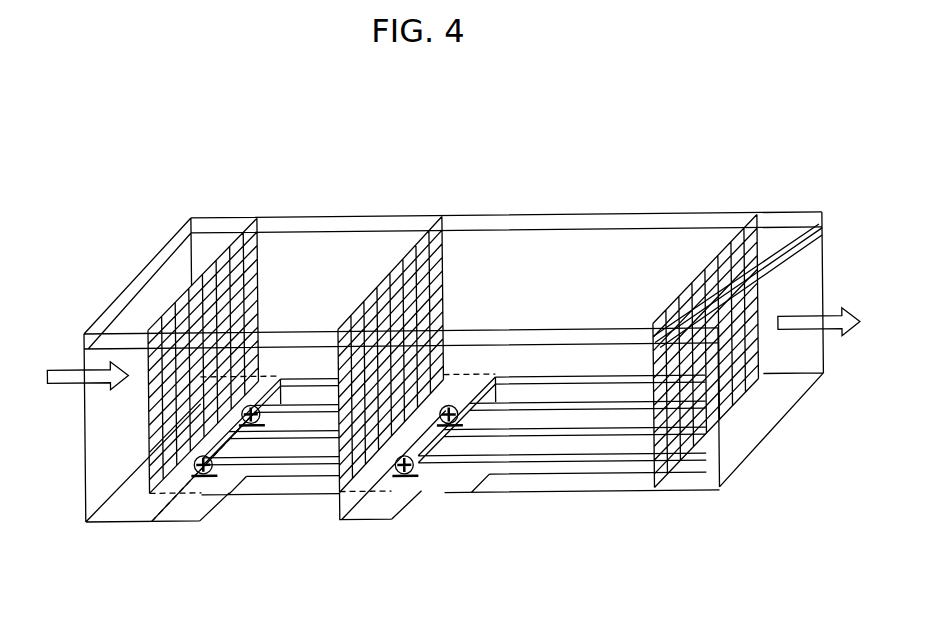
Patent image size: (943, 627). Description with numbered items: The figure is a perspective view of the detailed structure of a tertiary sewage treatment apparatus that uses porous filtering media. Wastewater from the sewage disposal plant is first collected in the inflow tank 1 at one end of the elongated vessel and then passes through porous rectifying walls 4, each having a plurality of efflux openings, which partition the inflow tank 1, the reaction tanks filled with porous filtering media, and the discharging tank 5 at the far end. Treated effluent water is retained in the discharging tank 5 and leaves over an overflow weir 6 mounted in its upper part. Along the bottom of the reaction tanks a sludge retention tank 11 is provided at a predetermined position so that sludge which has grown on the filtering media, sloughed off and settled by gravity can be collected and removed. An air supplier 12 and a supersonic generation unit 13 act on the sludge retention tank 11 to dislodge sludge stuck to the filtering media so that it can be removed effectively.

The inflow tank 1 is at (121, 503).
The sludge retention tank 11 is at (176, 510).
The air supplier 12 is at (213, 468).
The supersonic generation unit 13 is at (257, 420).
The porous rectifying wall 4 is at (748, 222).
The discharging tank 5 is at (692, 475).
The overflow weir 6 is at (785, 230).